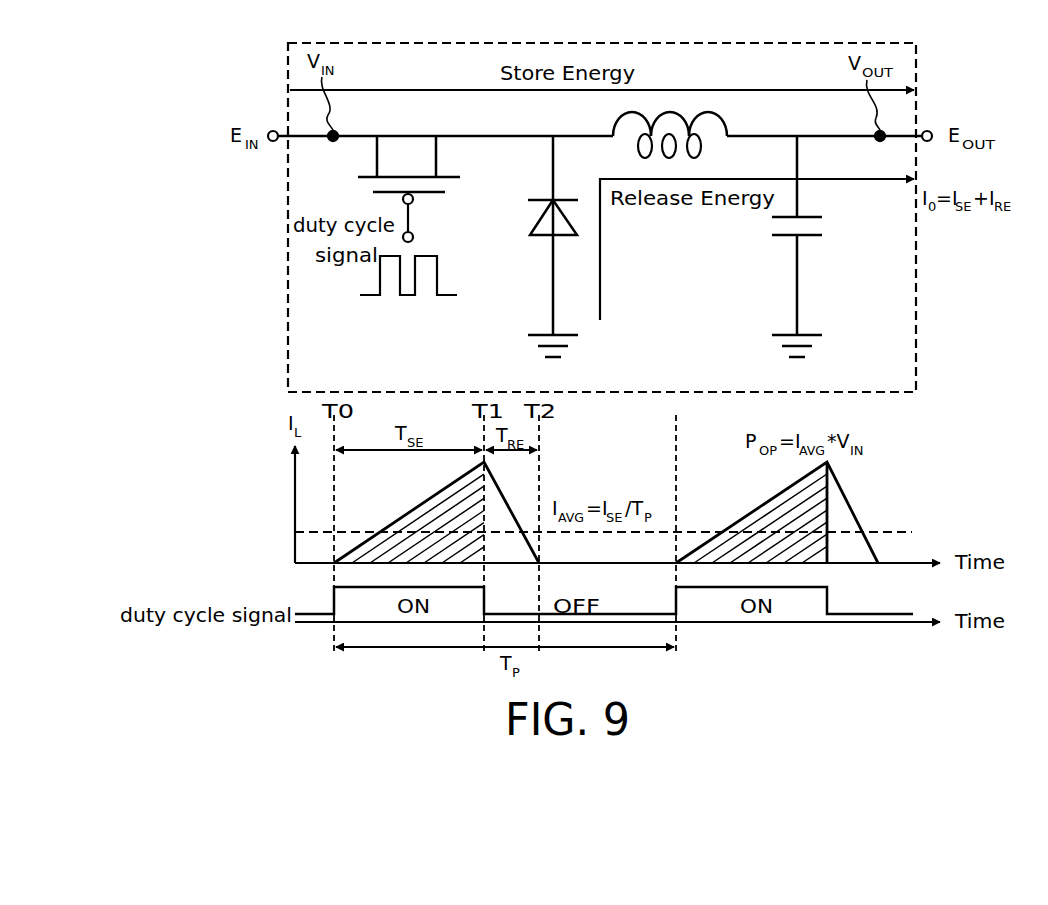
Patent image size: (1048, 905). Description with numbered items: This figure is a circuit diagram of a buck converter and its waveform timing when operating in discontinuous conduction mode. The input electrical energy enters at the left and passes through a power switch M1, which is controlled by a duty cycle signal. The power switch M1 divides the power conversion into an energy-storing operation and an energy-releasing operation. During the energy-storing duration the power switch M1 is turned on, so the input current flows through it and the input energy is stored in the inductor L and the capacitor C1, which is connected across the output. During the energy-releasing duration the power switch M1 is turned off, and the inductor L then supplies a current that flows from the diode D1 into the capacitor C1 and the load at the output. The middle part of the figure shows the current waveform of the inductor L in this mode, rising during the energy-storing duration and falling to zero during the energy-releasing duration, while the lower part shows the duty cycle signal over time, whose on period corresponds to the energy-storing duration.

The power switch M1 is at (409, 209).
The diode D1 is at (535, 246).
The inductor L is at (672, 109).
The capacitor C1 is at (817, 246).